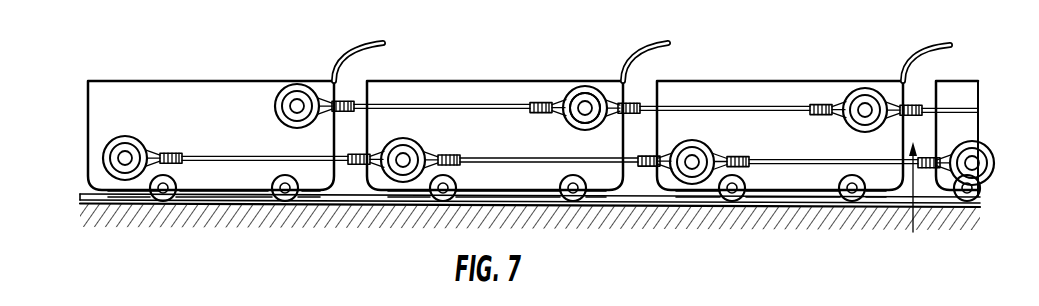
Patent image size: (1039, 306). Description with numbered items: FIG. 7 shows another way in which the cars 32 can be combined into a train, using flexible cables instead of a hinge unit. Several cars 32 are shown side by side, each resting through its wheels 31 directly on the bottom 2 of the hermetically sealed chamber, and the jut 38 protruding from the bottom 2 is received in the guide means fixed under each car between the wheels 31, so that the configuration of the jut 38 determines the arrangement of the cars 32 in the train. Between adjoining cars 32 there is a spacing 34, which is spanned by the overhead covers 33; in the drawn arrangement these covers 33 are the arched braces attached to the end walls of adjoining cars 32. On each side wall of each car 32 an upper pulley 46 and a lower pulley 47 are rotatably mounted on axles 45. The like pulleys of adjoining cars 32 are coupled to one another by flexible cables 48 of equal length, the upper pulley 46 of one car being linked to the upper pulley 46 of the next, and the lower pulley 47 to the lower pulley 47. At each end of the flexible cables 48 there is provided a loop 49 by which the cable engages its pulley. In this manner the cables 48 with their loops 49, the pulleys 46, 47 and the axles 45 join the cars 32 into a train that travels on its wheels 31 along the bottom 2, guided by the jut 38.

The bottom 2 is at (362, 208).
The wheels 31 is at (573, 201).
The car 32 is at (240, 178).
The overhead covers 33 is at (912, 65).
The spacing 34 is at (912, 202).
The jut 38 is at (645, 204).
The axles 45 is at (579, 101).
The upper pulley 46 is at (591, 97).
The lower pulley 47 is at (416, 144).
The flexible cables 48 is at (710, 107).
The loop 49 is at (330, 95).